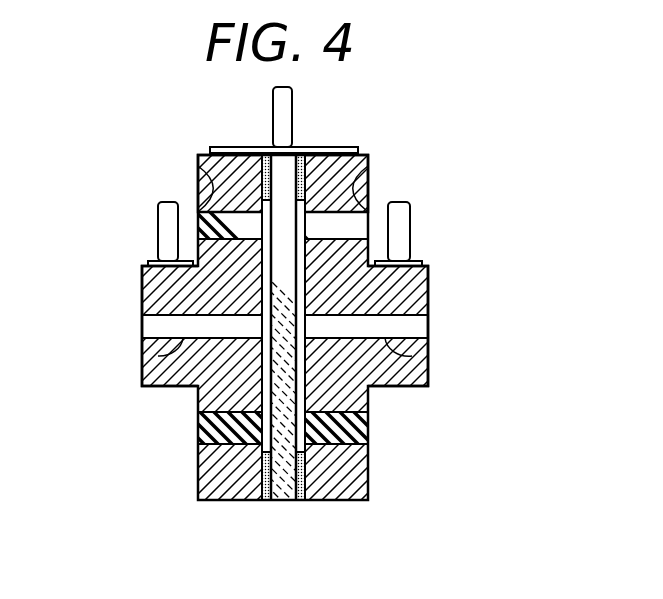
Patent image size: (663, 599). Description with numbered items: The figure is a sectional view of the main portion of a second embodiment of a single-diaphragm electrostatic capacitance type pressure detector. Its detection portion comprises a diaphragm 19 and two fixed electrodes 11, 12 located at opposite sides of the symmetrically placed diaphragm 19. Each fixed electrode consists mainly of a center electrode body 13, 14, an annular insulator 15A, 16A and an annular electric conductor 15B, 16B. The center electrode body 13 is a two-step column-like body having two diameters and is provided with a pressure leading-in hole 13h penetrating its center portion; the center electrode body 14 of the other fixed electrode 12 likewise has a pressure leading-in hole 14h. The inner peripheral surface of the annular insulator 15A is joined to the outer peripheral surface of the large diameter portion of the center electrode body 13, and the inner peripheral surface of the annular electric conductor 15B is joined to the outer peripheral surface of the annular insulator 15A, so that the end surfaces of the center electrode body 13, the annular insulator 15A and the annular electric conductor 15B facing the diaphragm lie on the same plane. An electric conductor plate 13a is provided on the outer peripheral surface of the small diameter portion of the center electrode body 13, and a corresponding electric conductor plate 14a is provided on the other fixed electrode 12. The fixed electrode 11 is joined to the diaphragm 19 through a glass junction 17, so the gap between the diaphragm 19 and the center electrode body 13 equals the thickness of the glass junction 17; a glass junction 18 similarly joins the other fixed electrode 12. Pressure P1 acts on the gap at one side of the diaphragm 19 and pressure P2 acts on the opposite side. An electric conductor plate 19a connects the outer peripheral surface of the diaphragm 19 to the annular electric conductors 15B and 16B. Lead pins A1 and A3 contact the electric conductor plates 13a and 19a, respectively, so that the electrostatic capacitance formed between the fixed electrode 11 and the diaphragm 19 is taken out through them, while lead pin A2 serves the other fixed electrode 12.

The fixed electrode 11 is at (374, 458).
The fixed electrode 12 is at (194, 470).
The center electrode body 13 is at (415, 285).
The electric conductor plate 13a is at (414, 262).
The pressure leading-in hole 13h is at (412, 356).
The center electrode body 14 is at (146, 291).
The electric conductor plate 14a is at (148, 262).
The pressure leading-in hole 14h is at (158, 356).
The annular insulator 15A is at (368, 188).
The annular electric conductor 15B is at (368, 166).
The annular insulator 16A is at (198, 183).
The annular electric conductor 16B is at (198, 168).
The glass junction 17 is at (300, 500).
The glass junction 18 is at (266, 500).
The diaphragm 19 is at (282, 500).
The electric conductor plate 19a is at (333, 147).
The lead pin A1 is at (410, 212).
The lead pin A2 is at (158, 217).
The lead pin A3 is at (273, 105).
The pressure P1 is at (465, 327).
The pressure P2 is at (110, 330).